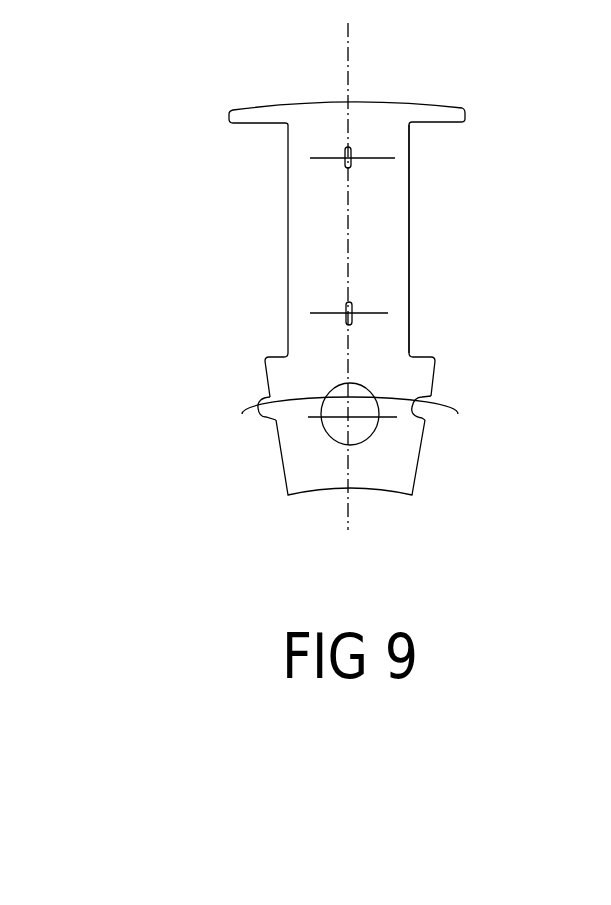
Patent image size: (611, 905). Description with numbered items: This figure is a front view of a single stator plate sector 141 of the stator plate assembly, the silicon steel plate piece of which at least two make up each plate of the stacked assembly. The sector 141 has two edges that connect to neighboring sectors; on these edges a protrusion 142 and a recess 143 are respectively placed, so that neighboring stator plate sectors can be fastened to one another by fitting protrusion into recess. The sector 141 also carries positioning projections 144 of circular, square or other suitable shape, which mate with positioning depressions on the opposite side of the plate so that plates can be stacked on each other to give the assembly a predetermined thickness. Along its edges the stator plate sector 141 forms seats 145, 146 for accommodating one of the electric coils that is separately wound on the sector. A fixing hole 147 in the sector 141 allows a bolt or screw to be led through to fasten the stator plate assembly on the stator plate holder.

The stator plate sector 141 is at (393, 463).
The protrusion 142 is at (262, 405).
The recess 143 is at (418, 400).
The positioning projection 144 is at (351, 166).
The seat 145 is at (288, 240).
The seat 146 is at (410, 190).
The fixing hole 147 is at (338, 432).